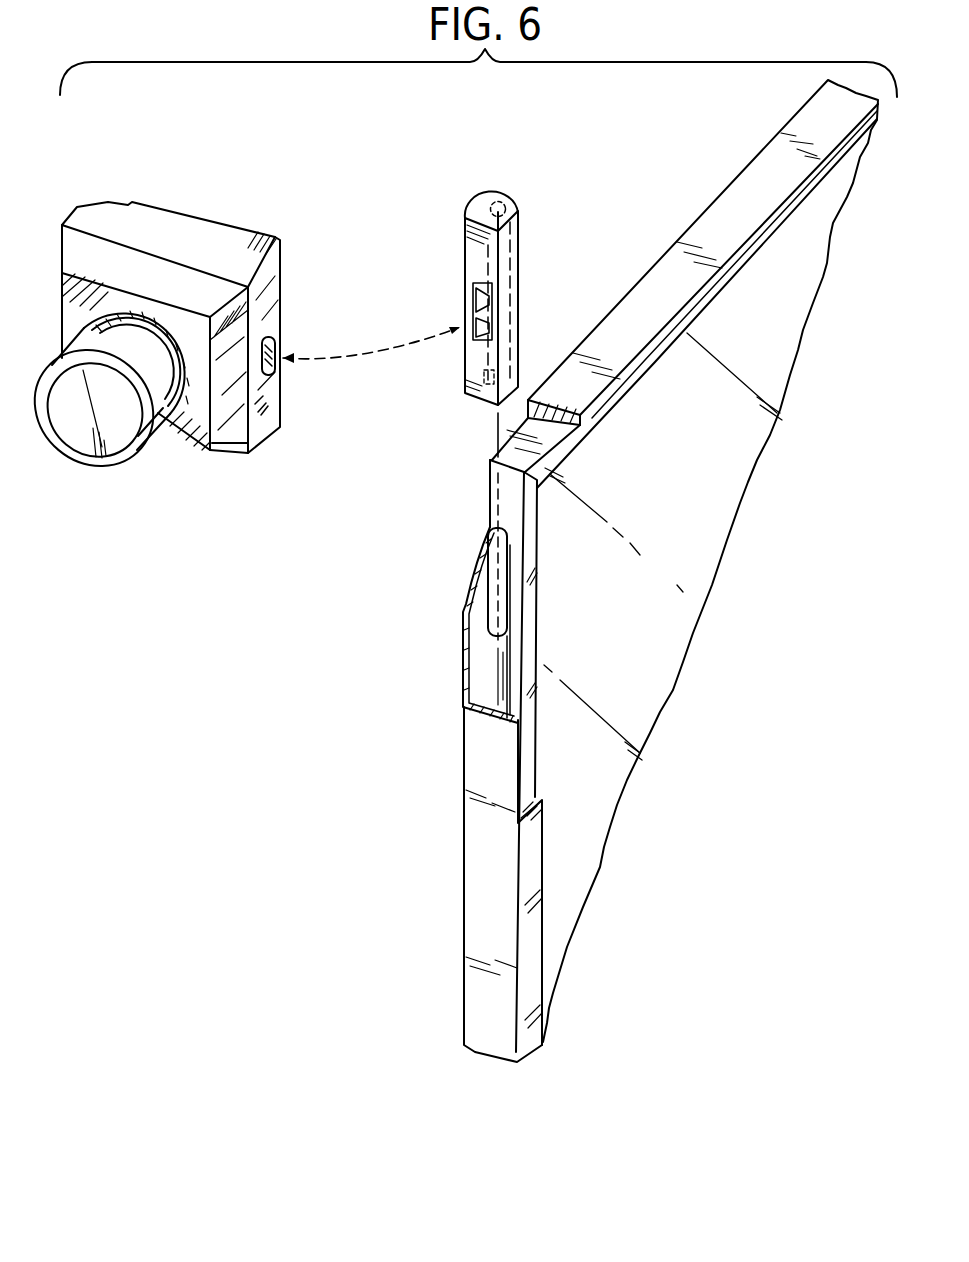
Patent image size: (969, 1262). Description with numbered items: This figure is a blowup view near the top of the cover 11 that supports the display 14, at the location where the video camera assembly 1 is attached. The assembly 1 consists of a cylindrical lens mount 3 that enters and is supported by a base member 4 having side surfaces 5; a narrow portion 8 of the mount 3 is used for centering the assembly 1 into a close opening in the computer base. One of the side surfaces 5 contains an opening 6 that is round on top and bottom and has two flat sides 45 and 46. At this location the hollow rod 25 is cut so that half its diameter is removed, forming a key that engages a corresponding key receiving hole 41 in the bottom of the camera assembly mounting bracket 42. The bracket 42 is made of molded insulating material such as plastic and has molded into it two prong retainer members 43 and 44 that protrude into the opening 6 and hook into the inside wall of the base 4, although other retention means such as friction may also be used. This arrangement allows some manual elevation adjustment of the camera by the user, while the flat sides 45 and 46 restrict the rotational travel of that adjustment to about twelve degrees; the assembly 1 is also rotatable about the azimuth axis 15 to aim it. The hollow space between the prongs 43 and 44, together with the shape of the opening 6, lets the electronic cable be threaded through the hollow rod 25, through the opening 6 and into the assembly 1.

The assembly 1 is at (103, 494).
The lens mount 3 is at (137, 463).
The base member 4 is at (163, 262).
The side surfaces 5 is at (263, 435).
The opening 6 is at (276, 342).
The narrow portion 8 is at (170, 404).
The cover 11 is at (728, 203).
The display 14 is at (721, 497).
The azimuth pivot axis 15 is at (491, 427).
The hollow rod 25 is at (491, 658).
The key receiving hole 41 is at (524, 300).
The camera assembly mounting bracket 42 is at (526, 222).
The prong retainer member 43 is at (480, 308).
The prong retainer member 44 is at (480, 324).
The flat side 45 is at (275, 347).
The flat side 46 is at (258, 369).